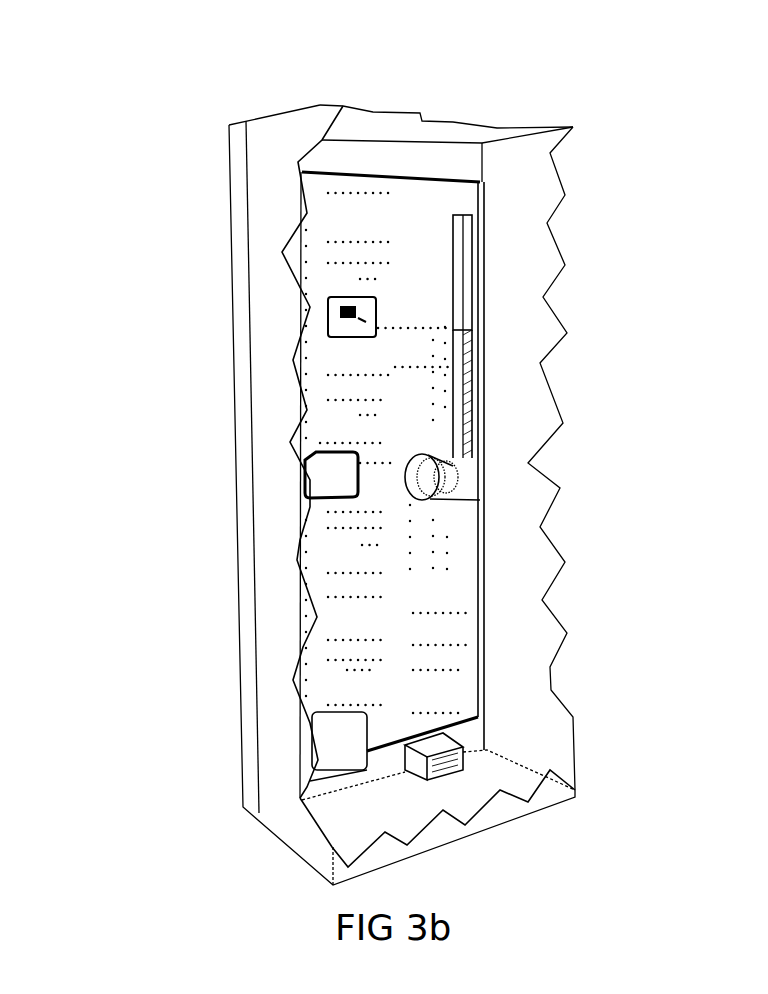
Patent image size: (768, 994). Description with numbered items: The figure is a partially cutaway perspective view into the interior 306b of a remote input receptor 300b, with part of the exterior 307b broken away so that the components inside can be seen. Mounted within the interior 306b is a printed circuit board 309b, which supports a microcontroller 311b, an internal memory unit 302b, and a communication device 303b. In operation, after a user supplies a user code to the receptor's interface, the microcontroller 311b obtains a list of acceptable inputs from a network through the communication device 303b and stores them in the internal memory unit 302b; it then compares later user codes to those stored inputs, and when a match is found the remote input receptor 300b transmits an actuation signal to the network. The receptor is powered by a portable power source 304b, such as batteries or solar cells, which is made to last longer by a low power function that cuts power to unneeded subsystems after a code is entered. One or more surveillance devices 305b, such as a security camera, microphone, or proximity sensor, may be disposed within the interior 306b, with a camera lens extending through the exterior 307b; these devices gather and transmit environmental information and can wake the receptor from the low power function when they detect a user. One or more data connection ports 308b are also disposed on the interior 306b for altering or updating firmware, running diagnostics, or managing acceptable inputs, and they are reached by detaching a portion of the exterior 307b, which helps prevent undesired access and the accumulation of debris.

The remote input receptor 300b is at (433, 66).
The internal memory unit 302b is at (328, 473).
The communication device 303b is at (462, 255).
The portable power source 304b is at (340, 747).
The surveillance device 305b is at (483, 187).
The interior 306b is at (513, 548).
The exterior 307b is at (277, 795).
The data connection port 308b is at (435, 762).
The printed circuit board 309b is at (335, 217).
The microcontroller 311b is at (337, 317).